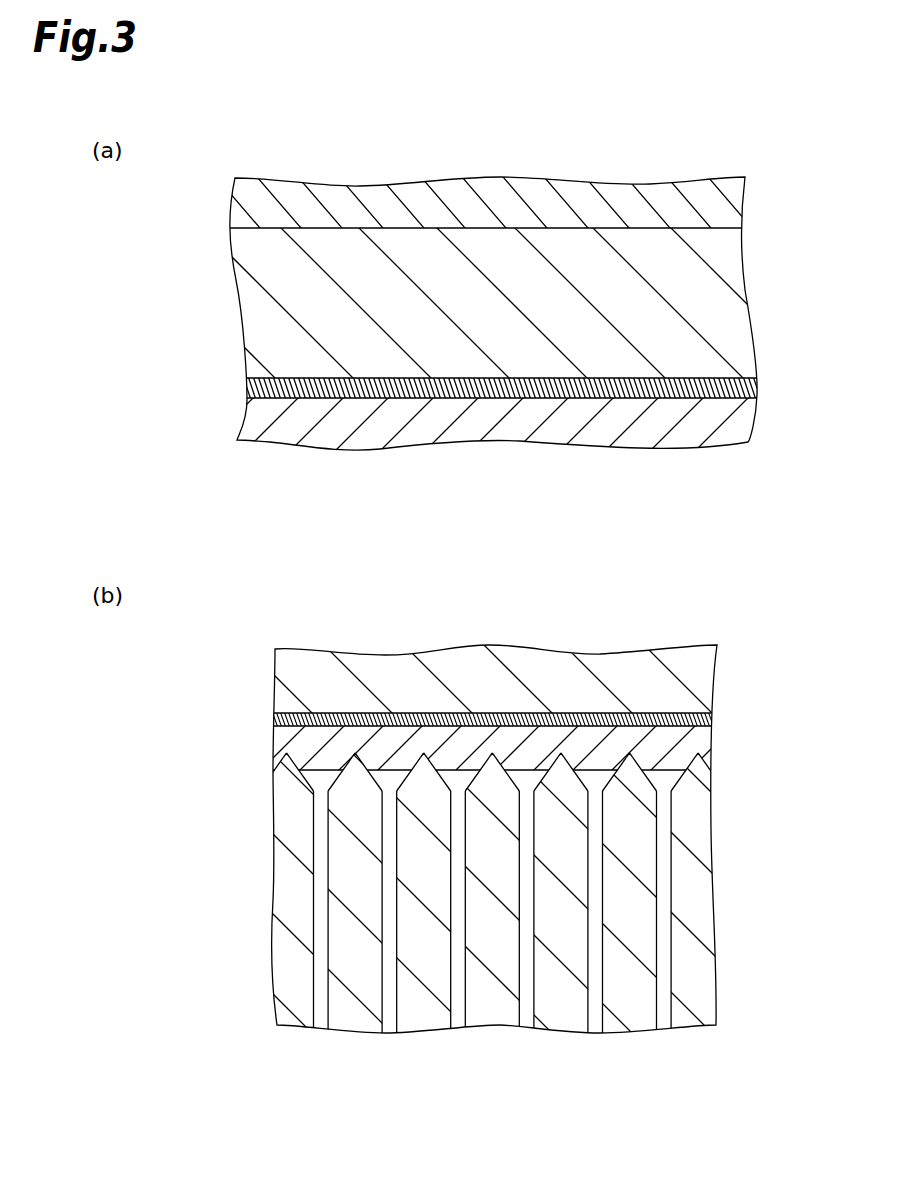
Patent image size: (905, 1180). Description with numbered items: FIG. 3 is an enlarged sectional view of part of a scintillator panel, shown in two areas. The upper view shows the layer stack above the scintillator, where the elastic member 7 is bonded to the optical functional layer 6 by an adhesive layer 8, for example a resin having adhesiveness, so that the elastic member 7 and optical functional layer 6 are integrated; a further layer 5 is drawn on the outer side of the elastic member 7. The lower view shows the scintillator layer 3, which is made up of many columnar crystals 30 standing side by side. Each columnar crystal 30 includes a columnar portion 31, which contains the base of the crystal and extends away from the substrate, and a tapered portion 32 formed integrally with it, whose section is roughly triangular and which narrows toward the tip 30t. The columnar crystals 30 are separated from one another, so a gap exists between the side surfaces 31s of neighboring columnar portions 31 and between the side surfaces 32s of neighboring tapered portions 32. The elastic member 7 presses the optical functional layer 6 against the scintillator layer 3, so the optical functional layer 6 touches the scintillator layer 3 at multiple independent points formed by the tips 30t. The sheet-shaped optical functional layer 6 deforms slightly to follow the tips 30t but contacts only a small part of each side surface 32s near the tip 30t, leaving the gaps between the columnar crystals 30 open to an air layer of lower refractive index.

The scintillator layer 3 is at (752, 948).
The protective layer 5 is at (744, 205).
The optical functional layer 6 is at (700, 420).
The elastic member 7 is at (736, 326).
The adhesive layer 8 is at (740, 386).
The columnar crystal 30 is at (452, 848).
The tip 30t is at (357, 738).
The columnar portion 31 is at (452, 872).
The side surface 31s is at (398, 1013).
The tapered portion 32 is at (425, 790).
The side surface 32s is at (400, 770).